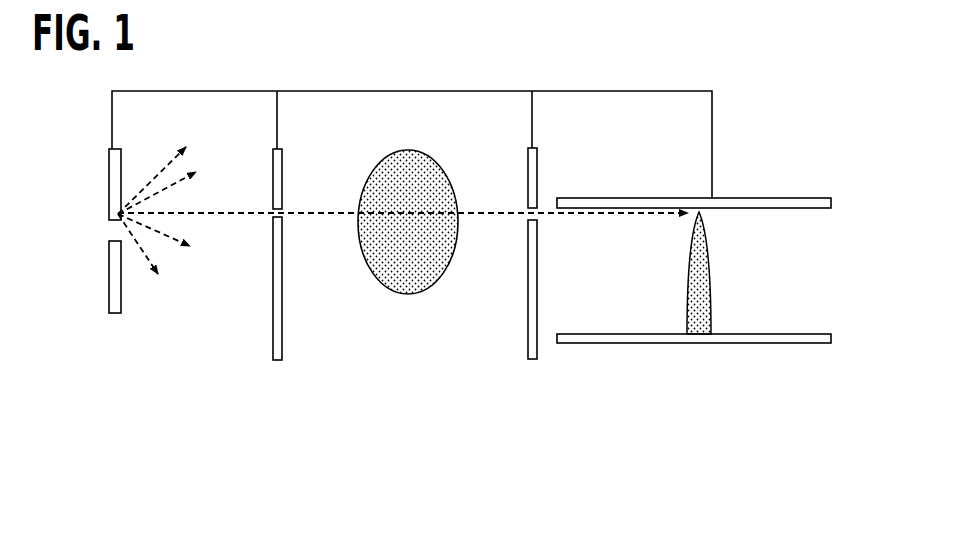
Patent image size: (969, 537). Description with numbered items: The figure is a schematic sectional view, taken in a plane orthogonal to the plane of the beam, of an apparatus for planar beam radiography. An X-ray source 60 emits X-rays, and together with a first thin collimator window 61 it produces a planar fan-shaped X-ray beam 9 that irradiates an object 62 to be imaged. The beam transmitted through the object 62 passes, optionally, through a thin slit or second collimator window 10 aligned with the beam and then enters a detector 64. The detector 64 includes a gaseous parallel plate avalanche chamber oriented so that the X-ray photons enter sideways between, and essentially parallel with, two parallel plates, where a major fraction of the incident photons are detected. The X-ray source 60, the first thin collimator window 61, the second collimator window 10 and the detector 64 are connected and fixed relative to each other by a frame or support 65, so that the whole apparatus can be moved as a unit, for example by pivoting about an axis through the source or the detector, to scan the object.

The planar X-ray beam 9 is at (311, 208).
The second collimator window 10 is at (530, 218).
The X-ray source 60 is at (105, 221).
The first thin collimator window 61 is at (281, 221).
The object 62 is at (418, 245).
The detector 64 is at (625, 295).
The frame or support 65 is at (412, 129).